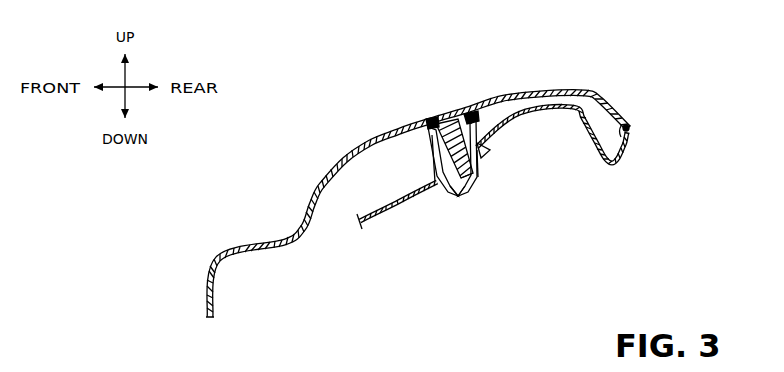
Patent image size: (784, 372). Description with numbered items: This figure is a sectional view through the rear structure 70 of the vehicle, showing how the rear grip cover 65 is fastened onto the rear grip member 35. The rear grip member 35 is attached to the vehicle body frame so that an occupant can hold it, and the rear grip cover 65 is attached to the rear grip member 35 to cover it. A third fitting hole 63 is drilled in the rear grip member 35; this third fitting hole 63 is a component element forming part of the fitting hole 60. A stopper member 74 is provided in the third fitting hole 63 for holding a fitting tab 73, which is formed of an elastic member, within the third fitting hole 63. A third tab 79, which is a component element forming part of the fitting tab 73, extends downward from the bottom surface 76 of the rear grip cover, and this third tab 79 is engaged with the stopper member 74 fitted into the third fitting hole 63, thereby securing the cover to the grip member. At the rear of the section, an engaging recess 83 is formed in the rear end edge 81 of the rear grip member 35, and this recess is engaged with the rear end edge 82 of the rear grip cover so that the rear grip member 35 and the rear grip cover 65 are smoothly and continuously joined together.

The rear structure 70 is at (363, 120).
The bottom surface of the rear grip cover 76 is at (492, 116).
The rear grip cover 65 is at (573, 88).
The rear grip member 35 is at (542, 118).
The rear end edge of the rear grip member 81 is at (633, 143).
The rear end edge of the rear grip cover 82 is at (629, 127).
The engaging recess 83 is at (630, 129).
The fitting hole 60 is at (439, 194).
The third fitting hole 63 is at (457, 185).
The third tab 79 is at (477, 173).
The fitting tab 73 is at (473, 180).
The stopper member 74 is at (468, 190).